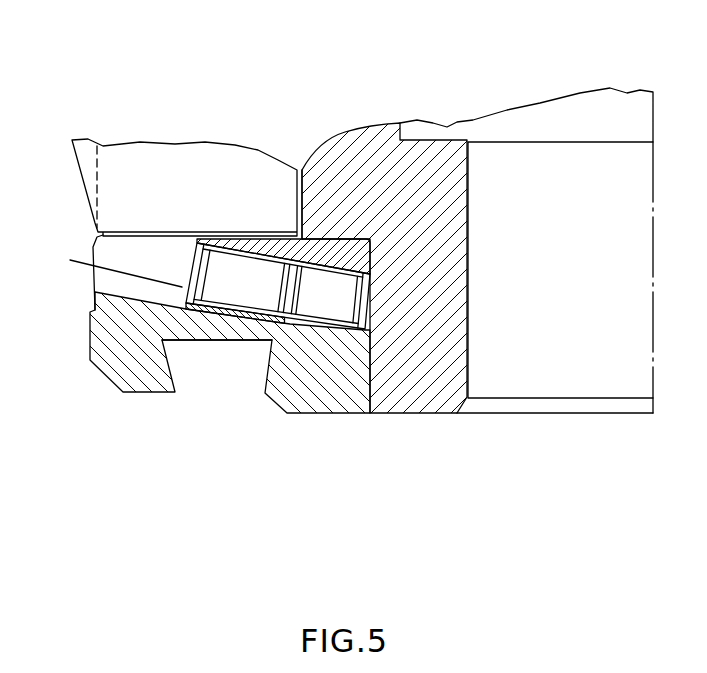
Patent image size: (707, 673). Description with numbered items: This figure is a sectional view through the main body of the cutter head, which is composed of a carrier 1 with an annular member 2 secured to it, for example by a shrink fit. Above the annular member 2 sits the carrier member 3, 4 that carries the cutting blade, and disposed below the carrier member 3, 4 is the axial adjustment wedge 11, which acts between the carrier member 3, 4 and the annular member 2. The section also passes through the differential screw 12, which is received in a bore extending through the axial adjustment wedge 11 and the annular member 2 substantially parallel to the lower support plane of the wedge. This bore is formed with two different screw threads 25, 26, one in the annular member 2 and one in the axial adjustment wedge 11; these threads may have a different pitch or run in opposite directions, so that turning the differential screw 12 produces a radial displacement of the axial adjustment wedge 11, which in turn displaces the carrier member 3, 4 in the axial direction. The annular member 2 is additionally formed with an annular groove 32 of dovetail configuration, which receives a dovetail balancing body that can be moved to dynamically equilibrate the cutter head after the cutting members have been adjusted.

The carrier 1 is at (433, 375).
The annular member 2 is at (328, 380).
The carrier member 3 is at (107, 120).
The carrier member 4 is at (163, 193).
The axial adjustment wedge 11 is at (277, 247).
The differential screw 12 is at (410, 316).
The screw thread 25 is at (232, 291).
The screw thread 26 is at (343, 267).
The annular groove 32 is at (170, 357).